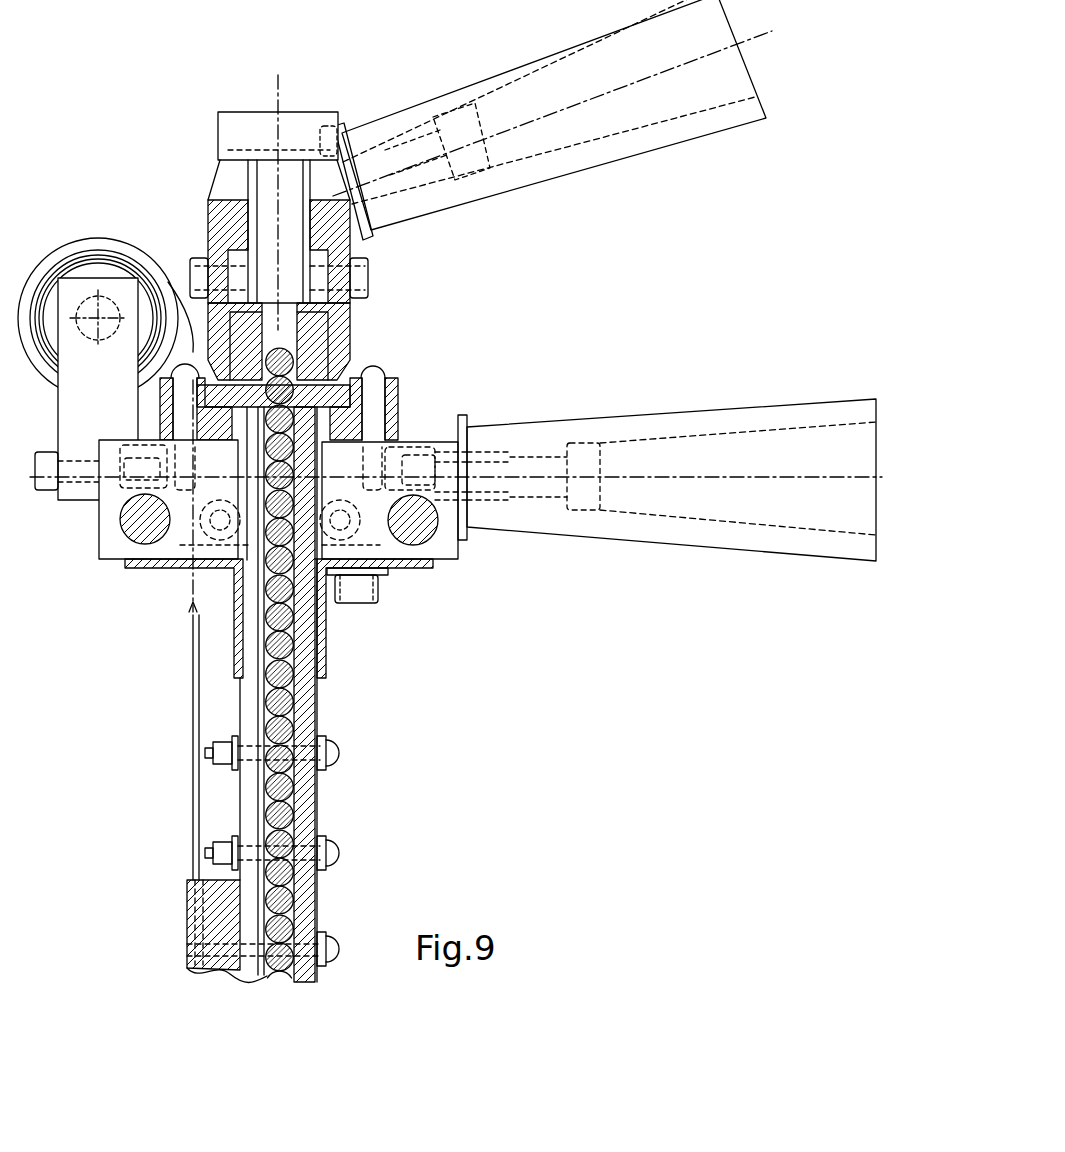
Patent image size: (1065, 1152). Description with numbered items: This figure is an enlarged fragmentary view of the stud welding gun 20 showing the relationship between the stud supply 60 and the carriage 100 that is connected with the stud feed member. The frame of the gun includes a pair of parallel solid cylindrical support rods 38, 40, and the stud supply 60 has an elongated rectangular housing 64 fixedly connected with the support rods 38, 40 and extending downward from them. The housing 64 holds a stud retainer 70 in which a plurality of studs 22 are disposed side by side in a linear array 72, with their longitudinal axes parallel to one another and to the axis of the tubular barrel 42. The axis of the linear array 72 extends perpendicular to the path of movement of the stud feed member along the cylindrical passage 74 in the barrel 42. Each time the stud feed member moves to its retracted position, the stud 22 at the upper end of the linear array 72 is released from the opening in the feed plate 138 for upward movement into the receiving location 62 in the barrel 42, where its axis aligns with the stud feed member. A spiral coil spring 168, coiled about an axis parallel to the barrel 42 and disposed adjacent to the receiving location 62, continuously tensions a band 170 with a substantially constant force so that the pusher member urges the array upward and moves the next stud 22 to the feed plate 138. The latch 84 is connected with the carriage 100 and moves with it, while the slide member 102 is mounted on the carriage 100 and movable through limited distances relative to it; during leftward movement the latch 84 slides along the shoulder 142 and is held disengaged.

The stud welding gun 20 is at (372, 76).
The latch 84 is at (262, 125).
The shoulder 142 is at (232, 182).
The slide member 102 is at (222, 227).
The carriage 100 is at (337, 277).
The barrel 42 is at (323, 322).
The cylindrical passage 74 is at (297, 358).
The receiving location 62 is at (292, 378).
The studs 22 is at (313, 415).
The feed plate 138 is at (397, 394).
The spring 168 is at (46, 270).
The support rod 38 is at (143, 532).
The support rod 40 is at (410, 533).
The stud retainer 70 is at (305, 716).
The linear array 72 is at (258, 795).
The band 170 is at (193, 762).
The housing 64 is at (327, 897).
The stud supply 60 is at (186, 850).